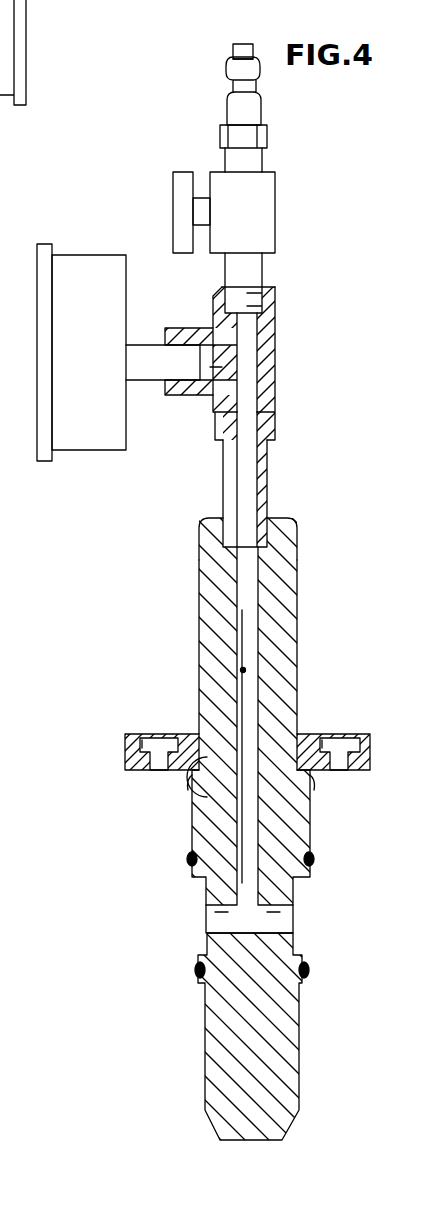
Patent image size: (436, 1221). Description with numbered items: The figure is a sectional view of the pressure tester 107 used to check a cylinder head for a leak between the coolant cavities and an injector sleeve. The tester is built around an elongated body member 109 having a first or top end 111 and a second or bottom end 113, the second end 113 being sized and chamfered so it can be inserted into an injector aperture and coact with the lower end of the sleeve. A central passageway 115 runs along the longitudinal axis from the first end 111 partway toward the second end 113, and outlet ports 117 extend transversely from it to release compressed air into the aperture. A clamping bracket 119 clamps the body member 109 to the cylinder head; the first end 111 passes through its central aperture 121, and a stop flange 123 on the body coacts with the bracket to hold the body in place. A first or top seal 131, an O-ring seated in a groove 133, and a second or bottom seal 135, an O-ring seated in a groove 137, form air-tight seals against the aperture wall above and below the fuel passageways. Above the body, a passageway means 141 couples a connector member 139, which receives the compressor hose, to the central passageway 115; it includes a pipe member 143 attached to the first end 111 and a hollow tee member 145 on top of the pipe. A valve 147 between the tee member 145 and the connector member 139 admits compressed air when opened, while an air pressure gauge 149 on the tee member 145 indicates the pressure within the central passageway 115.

The pressure tester 107 is at (220, 46).
The connector member 139 is at (236, 107).
The valve 147 is at (265, 198).
The passageway means 141 is at (280, 288).
The hollow tee member 145 is at (271, 367).
The pipe member 143 is at (264, 480).
The air pressure gauge 149 is at (95, 265).
The first end 111 is at (212, 520).
The body member 109 is at (207, 632).
The central passageway 115 is at (243, 670).
The clamping bracket 119 is at (126, 768).
The stop flange 123 is at (183, 779).
The central aperture 121 is at (199, 788).
The first seal 131 is at (188, 856).
The groove 133 is at (311, 855).
The outlet ports 117 is at (212, 912).
The second end 113 is at (212, 1120).
The second seal 135 is at (196, 969).
The groove 137 is at (308, 975).